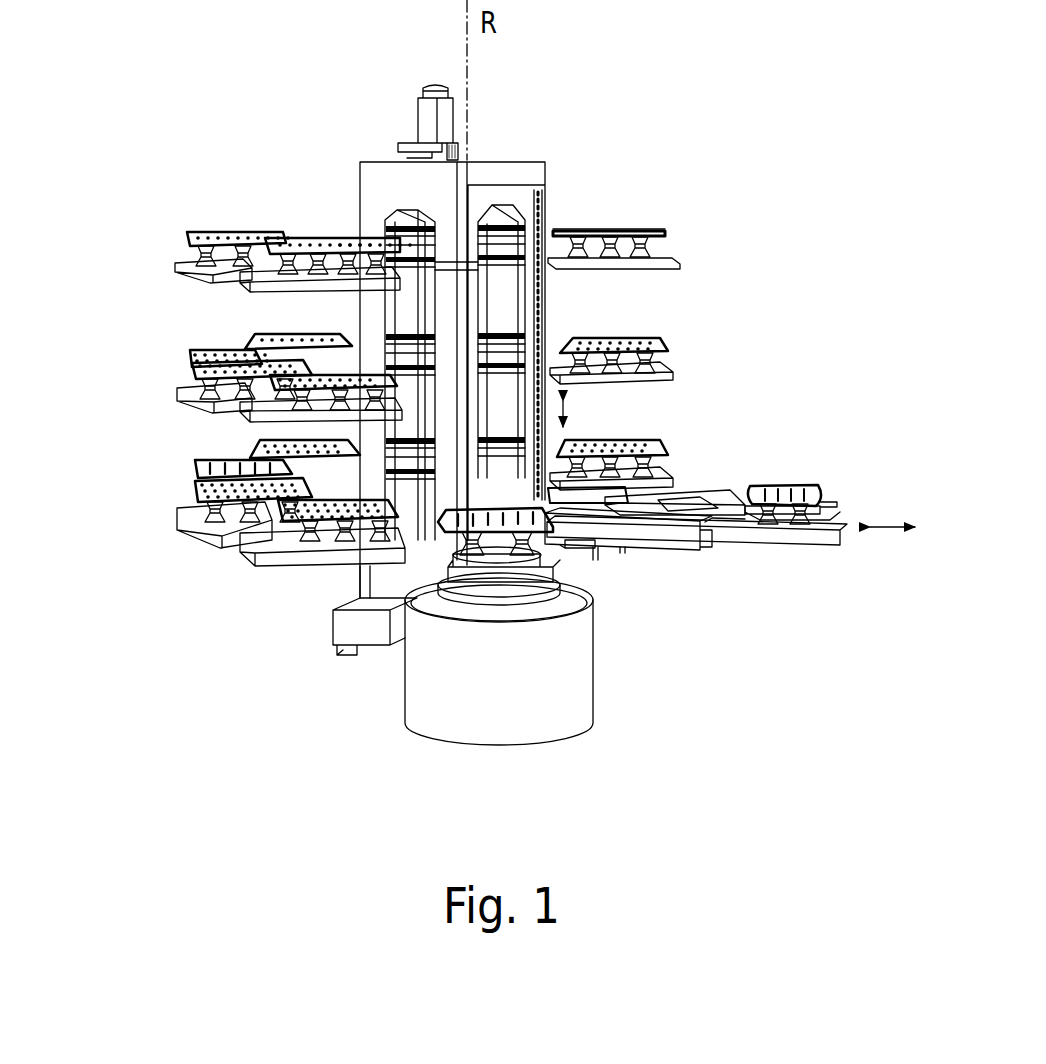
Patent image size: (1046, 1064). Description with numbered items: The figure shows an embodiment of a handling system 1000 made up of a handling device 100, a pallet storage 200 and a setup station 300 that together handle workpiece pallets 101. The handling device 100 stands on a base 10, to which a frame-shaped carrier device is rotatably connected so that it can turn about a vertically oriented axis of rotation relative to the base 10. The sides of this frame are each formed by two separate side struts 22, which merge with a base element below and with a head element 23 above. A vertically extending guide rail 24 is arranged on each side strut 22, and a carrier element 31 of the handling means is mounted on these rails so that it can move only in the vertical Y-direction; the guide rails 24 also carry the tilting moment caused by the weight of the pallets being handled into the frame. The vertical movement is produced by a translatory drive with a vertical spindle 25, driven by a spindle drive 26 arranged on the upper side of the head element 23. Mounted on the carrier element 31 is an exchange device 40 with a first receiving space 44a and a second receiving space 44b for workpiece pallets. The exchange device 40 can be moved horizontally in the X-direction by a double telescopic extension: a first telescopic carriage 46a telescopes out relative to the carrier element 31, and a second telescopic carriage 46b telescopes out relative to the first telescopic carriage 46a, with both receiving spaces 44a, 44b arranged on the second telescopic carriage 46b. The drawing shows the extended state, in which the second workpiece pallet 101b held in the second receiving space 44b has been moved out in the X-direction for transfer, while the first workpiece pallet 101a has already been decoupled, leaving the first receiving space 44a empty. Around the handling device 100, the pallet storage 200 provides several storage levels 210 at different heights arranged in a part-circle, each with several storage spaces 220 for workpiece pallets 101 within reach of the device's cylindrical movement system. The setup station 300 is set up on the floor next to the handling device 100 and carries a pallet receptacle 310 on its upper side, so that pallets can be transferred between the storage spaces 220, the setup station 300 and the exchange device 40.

The handling system 1000 is at (198, 645).
The base 10 is at (353, 628).
The side struts 22 is at (447, 237).
The head element 23 is at (540, 177).
The guide rail 24 is at (540, 307).
The vertical spindle 25 is at (420, 280).
The spindle drive 26 is at (423, 107).
The carrier element 31 is at (594, 560).
The exchange device 40 is at (622, 560).
The first receiving space 44a is at (667, 498).
The second receiving space 44b is at (795, 478).
The first telescopic carriage 46a is at (680, 562).
The second telescopic carriage 46b is at (778, 538).
The handling device 100 is at (355, 585).
The workpiece pallets 101 is at (270, 517).
The first workpiece pallet 101a is at (193, 497).
The second workpiece pallet 101b is at (806, 488).
The pallet storage 200 is at (230, 212).
The storage levels 210 is at (175, 270).
The storage spaces 220 is at (320, 533).
The setup station 300 is at (558, 720).
The pallet receptacle 310 is at (500, 573).